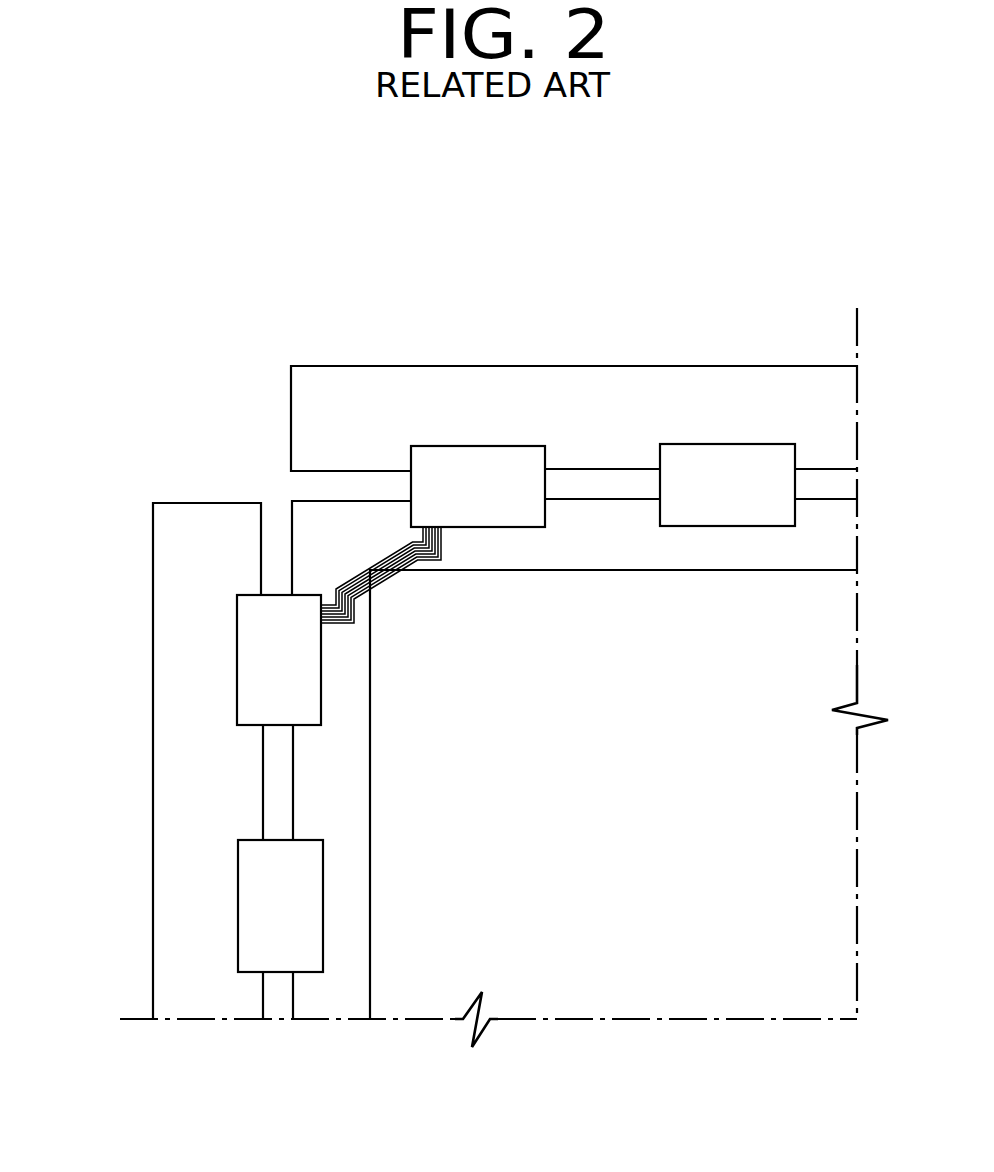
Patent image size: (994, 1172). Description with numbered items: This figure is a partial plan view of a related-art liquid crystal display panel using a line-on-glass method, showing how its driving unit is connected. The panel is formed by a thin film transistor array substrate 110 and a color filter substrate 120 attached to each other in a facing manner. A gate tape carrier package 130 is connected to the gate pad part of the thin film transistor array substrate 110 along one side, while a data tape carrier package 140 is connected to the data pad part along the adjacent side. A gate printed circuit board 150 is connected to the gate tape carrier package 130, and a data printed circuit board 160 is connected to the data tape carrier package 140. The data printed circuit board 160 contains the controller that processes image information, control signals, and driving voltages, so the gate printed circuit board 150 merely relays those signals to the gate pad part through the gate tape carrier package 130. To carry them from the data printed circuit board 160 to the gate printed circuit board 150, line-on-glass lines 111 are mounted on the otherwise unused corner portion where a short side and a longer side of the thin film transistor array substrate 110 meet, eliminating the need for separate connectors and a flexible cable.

The thin film transistor array substrate 110 is at (345, 988).
The line-on-glass lines 111 is at (345, 572).
The color filter substrate 120 is at (598, 985).
The gate tape carrier package 130 is at (253, 665).
The data tape carrier package 140 is at (510, 463).
The gate printed circuit board 150 is at (170, 568).
The data printed circuit board 160 is at (412, 380).